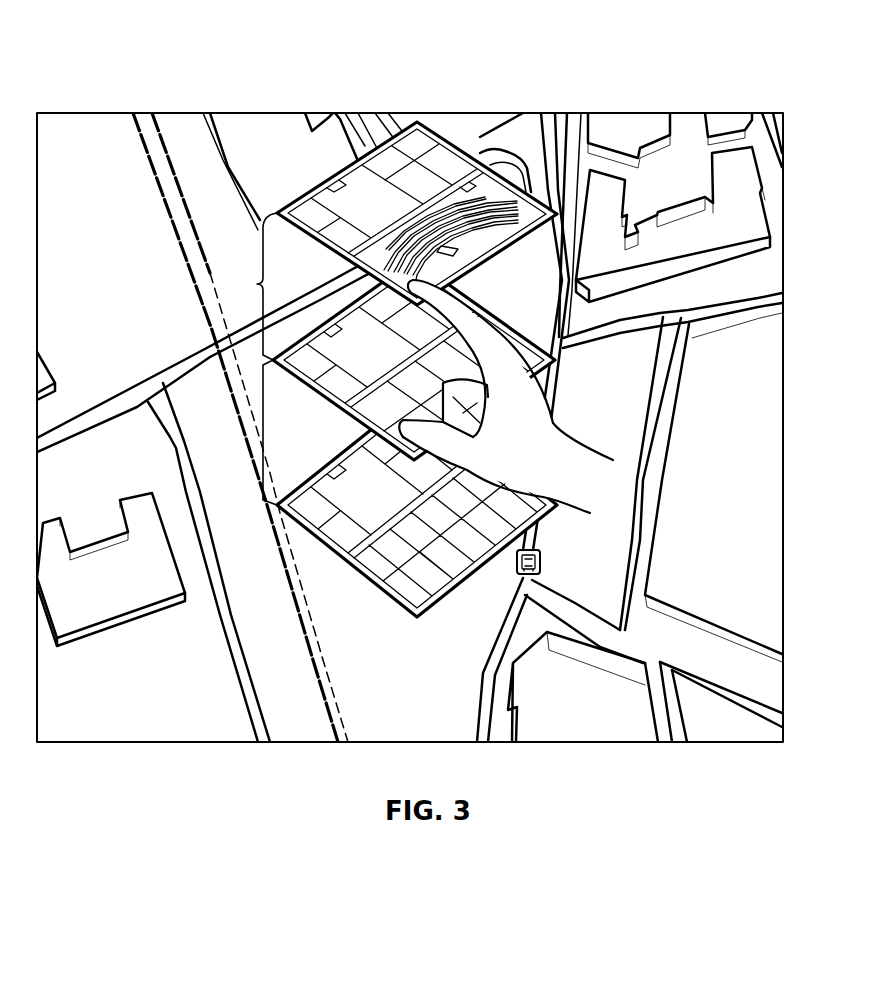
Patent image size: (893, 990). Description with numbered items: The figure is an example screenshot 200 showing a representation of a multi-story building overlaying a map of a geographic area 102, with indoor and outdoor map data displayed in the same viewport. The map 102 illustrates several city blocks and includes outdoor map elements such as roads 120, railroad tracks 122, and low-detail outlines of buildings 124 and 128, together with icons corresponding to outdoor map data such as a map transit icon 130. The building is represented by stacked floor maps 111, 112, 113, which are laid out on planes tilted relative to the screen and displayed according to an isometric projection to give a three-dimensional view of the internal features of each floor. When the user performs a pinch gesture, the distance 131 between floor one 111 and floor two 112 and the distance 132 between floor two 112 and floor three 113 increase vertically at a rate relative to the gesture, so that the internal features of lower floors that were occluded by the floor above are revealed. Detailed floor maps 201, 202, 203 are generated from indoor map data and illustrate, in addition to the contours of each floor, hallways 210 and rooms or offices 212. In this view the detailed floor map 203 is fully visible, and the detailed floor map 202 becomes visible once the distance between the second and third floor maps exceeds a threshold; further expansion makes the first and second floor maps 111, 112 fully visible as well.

The screenshot 200 is at (638, 71).
The map of a geographic area 102 is at (93, 150).
The floor map of floor one 111 is at (417, 514).
The floor map of floor two 112 is at (414, 360).
The floor map of floor three 113 is at (406, 189).
The roads 120 is at (103, 408).
The railroad tracks 122 is at (243, 445).
The building 124 is at (108, 630).
The building 128 is at (623, 285).
The map transit icon 130 is at (543, 559).
The distance between floor one and floor two 131 is at (257, 428).
The distance between floor two and floor three 132 is at (257, 283).
The detailed floor map 201 is at (342, 535).
The detailed floor map 202 is at (330, 353).
The detailed floor map 203 is at (511, 203).
The hallways 210 is at (465, 183).
The rooms or offices 212 is at (300, 210).